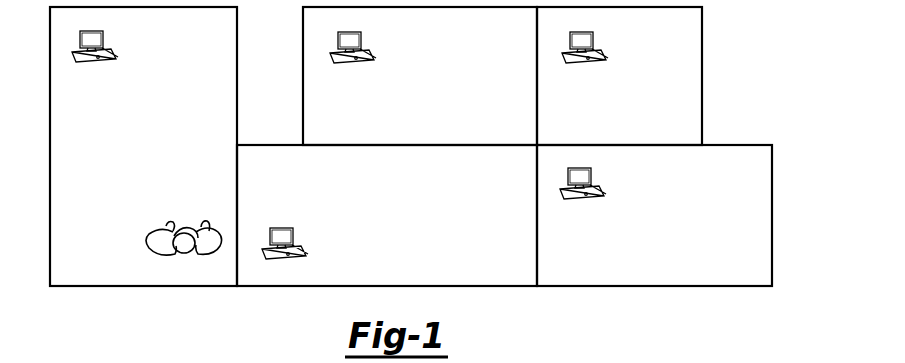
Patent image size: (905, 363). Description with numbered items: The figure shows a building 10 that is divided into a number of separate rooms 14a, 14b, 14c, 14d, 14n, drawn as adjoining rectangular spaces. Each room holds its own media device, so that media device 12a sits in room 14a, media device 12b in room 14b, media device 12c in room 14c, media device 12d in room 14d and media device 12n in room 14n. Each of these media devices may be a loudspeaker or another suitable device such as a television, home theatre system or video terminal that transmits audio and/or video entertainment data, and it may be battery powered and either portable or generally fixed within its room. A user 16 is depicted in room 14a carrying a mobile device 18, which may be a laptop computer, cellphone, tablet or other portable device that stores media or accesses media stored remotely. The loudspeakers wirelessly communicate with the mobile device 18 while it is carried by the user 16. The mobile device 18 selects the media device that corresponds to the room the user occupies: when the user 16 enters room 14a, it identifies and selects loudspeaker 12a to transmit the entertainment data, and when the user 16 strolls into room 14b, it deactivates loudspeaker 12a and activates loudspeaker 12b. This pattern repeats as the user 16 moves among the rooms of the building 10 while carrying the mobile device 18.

The building 10 is at (720, 78).
The media device 12a is at (118, 45).
The media device 12b is at (308, 242).
The media device 12c is at (376, 46).
The media device 12d is at (608, 46).
The media device 12n is at (606, 182).
The room 14a is at (155, 148).
The room 14b is at (414, 216).
The room 14c is at (429, 106).
The room 14d is at (646, 101).
The room 14n is at (676, 231).
The user 16 is at (184, 232).
The mobile device 18 is at (111, 246).